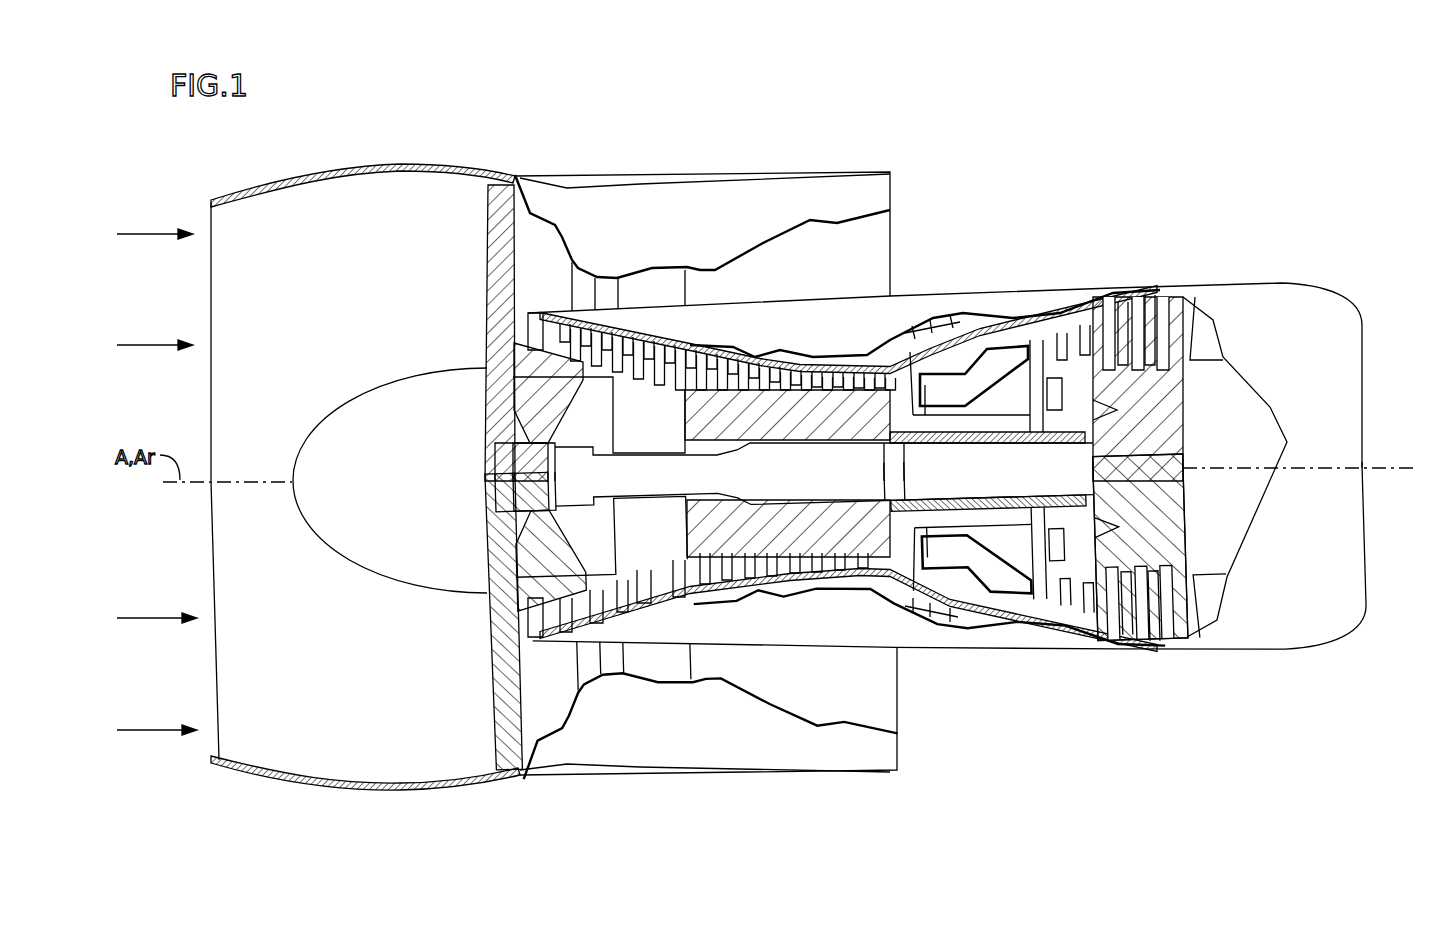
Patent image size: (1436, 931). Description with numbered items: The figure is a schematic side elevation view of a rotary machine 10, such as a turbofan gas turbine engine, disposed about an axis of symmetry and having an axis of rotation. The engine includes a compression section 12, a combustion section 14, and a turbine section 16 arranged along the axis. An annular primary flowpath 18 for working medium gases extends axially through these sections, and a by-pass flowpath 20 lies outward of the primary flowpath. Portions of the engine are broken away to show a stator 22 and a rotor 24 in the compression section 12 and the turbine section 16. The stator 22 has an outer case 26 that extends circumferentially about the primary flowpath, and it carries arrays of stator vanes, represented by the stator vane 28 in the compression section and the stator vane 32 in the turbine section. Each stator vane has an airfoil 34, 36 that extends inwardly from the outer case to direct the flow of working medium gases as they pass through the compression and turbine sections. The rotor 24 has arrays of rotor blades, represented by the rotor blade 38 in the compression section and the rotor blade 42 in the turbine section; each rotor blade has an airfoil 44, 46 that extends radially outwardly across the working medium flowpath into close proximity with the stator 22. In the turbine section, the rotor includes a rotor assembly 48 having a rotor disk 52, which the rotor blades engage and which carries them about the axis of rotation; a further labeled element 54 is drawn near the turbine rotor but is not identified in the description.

The rotary machine 10 is at (1167, 198).
The compression section 12 is at (725, 353).
The combustion section 14 is at (960, 395).
The turbine section 16 is at (1182, 283).
The primary flowpath 18 is at (157, 729).
The by-pass flowpath 20 is at (155, 617).
The stator 22 is at (892, 352).
The rotor 24 is at (1067, 420).
The outer case 26 is at (832, 362).
The stator vane 28 is at (748, 377).
The stator vane 32 is at (1060, 343).
The airfoil 34 is at (748, 377).
The airfoil 36 is at (1052, 378).
The rotor blade 38 is at (800, 340).
The rotor blade 42 is at (1043, 340).
The airfoil 44 is at (800, 395).
The airfoil 46 is at (1047, 358).
The rotor assembly 48 is at (1076, 541).
The rotor disk 52 is at (1077, 422).
The combustor support 54 is at (1043, 522).